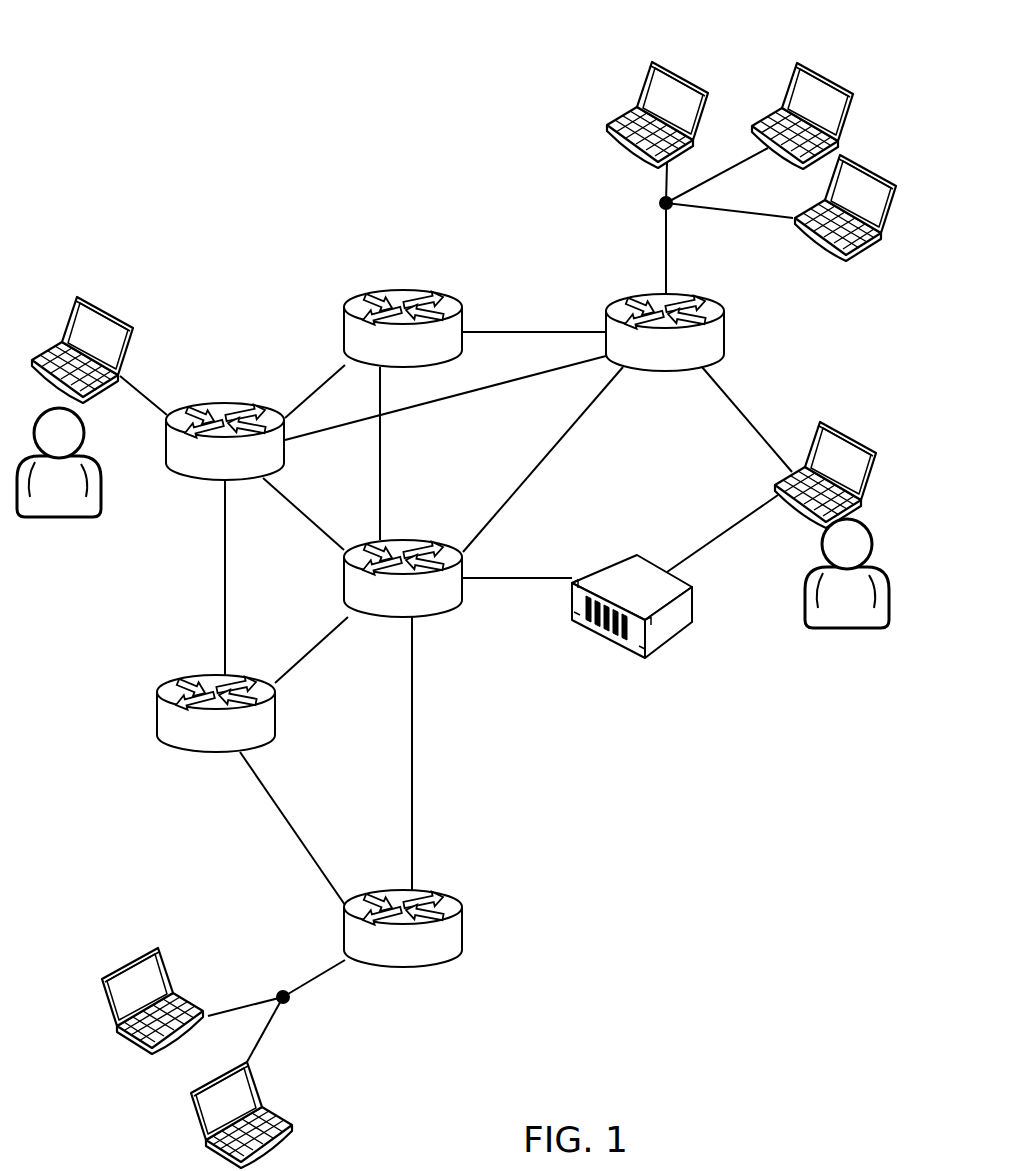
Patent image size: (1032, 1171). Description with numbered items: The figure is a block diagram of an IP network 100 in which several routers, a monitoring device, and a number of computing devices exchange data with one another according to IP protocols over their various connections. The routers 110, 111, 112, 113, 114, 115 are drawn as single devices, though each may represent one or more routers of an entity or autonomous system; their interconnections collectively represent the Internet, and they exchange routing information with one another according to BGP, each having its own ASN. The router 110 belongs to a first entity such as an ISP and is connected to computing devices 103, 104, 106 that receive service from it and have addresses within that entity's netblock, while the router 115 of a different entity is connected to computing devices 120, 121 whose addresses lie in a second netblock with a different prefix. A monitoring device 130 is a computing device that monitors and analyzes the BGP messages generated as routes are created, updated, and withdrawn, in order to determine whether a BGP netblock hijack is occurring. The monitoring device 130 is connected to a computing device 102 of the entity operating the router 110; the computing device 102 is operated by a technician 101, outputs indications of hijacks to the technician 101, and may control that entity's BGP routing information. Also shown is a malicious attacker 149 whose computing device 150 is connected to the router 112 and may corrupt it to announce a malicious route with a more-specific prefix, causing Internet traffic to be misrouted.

The IP network 100 is at (151, 224).
The technician 101 is at (821, 609).
The computing device 102 is at (840, 420).
The computing device 103 is at (683, 73).
The computing device 104 is at (812, 70).
The computing device 106 is at (853, 158).
The router 110 is at (646, 361).
The router 111 is at (384, 357).
The router 112 is at (206, 470).
The router 113 is at (384, 607).
The router 114 is at (199, 742).
The router 115 is at (386, 957).
The computing device 120 is at (127, 962).
The computing device 121 is at (195, 1115).
The monitoring device 130 is at (618, 596).
The malicious attacker 149 is at (38, 504).
The computing device 150 is at (107, 312).